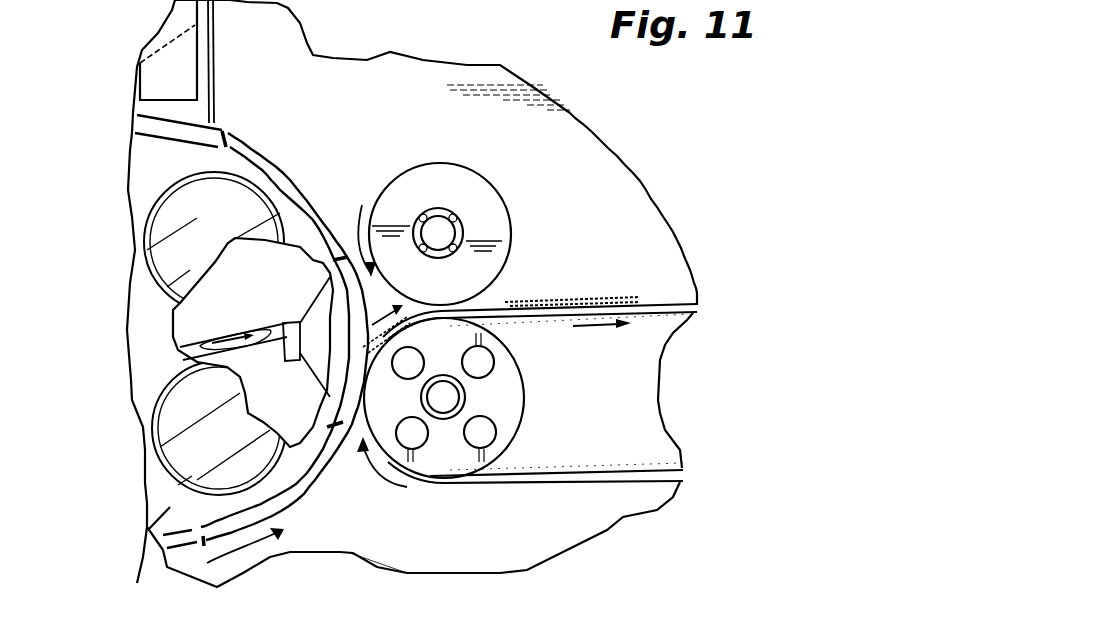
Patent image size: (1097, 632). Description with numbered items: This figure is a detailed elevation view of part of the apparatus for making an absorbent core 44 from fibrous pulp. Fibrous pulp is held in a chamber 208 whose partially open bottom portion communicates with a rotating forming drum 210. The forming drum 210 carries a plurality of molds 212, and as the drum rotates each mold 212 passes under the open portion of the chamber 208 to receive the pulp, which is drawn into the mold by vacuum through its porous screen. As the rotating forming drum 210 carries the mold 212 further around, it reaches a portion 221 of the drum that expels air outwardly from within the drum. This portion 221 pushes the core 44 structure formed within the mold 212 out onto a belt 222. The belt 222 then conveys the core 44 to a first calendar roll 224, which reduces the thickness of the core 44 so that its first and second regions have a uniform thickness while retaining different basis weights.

The absorbent core 44 is at (432, 307).
The chamber 208 is at (467, 631).
The rotating forming drum 210 is at (145, 575).
The mold 212 is at (329, 331).
The portion of the drum that expels air 221 is at (287, 322).
The belt 222 is at (565, 317).
The first calendar roll 224 is at (480, 220).